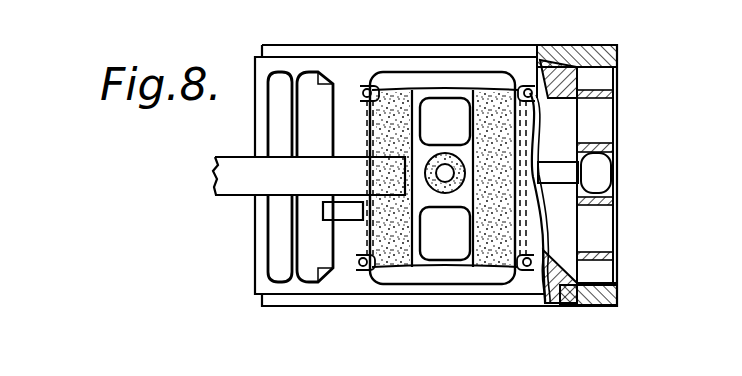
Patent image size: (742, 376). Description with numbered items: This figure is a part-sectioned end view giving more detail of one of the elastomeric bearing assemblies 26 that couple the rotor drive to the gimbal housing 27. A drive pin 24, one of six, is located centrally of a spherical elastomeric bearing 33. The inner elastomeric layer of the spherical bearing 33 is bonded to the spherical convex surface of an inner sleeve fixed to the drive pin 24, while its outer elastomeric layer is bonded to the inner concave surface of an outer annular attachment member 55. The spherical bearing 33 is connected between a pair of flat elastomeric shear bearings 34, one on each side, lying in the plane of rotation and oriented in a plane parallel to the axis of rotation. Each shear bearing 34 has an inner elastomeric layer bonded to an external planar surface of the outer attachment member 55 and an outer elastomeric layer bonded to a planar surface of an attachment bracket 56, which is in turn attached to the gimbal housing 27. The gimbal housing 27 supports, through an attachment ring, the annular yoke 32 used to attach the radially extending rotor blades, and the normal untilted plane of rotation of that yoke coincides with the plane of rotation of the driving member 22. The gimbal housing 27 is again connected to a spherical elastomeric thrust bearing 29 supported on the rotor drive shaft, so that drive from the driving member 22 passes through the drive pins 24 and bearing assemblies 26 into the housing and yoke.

The driving member 22 is at (550, 168).
The drive pin 24 is at (585, 178).
The elastomeric bearing assembly 26 is at (640, 75).
The gimbal housing 27 is at (257, 122).
The spherical elastomeric thrust bearing 29 is at (565, 45).
The annular yoke 32 is at (238, 187).
The spherical elastomeric bearing 33 is at (602, 152).
The elastomeric shear bearing 34 is at (385, 229).
The outer annular attachment member 55 is at (467, 88).
The attachment bracket 56 is at (367, 88).